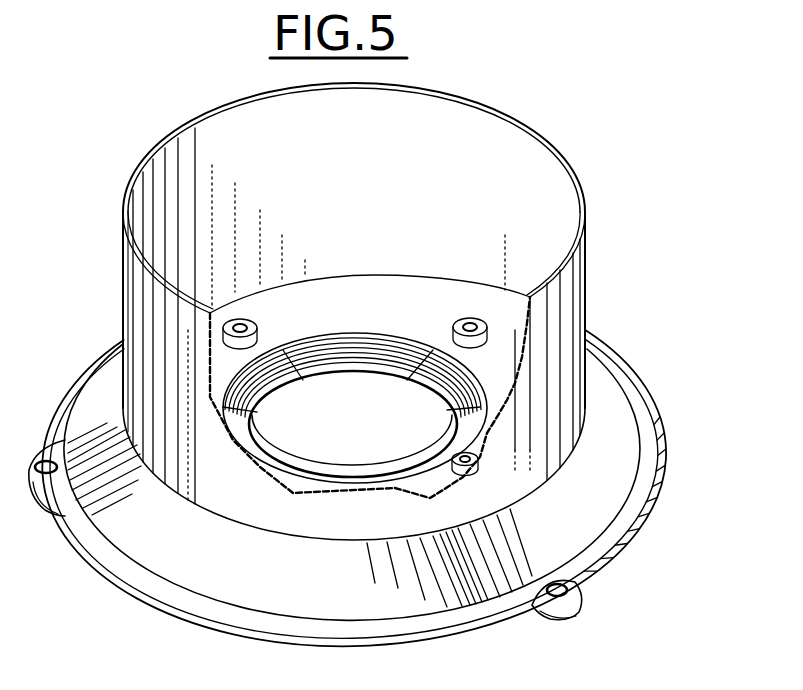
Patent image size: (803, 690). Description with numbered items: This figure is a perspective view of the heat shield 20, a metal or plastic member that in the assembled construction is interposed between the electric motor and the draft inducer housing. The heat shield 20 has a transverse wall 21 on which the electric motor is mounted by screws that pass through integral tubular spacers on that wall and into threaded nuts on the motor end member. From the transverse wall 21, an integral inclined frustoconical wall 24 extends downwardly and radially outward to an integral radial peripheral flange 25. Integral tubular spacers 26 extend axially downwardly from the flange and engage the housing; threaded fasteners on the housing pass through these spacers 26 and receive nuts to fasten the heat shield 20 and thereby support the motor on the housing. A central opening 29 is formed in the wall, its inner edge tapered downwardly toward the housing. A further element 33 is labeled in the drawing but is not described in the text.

The heat shield 20 is at (590, 273).
The transverse wall 21 is at (392, 316).
The inclined frustoconical wall 24 is at (610, 402).
The radial peripheral flange 25 is at (667, 463).
The integral tubular spacers 26 is at (42, 510).
The central opening 29 is at (367, 366).
The side wall 33 is at (124, 283).